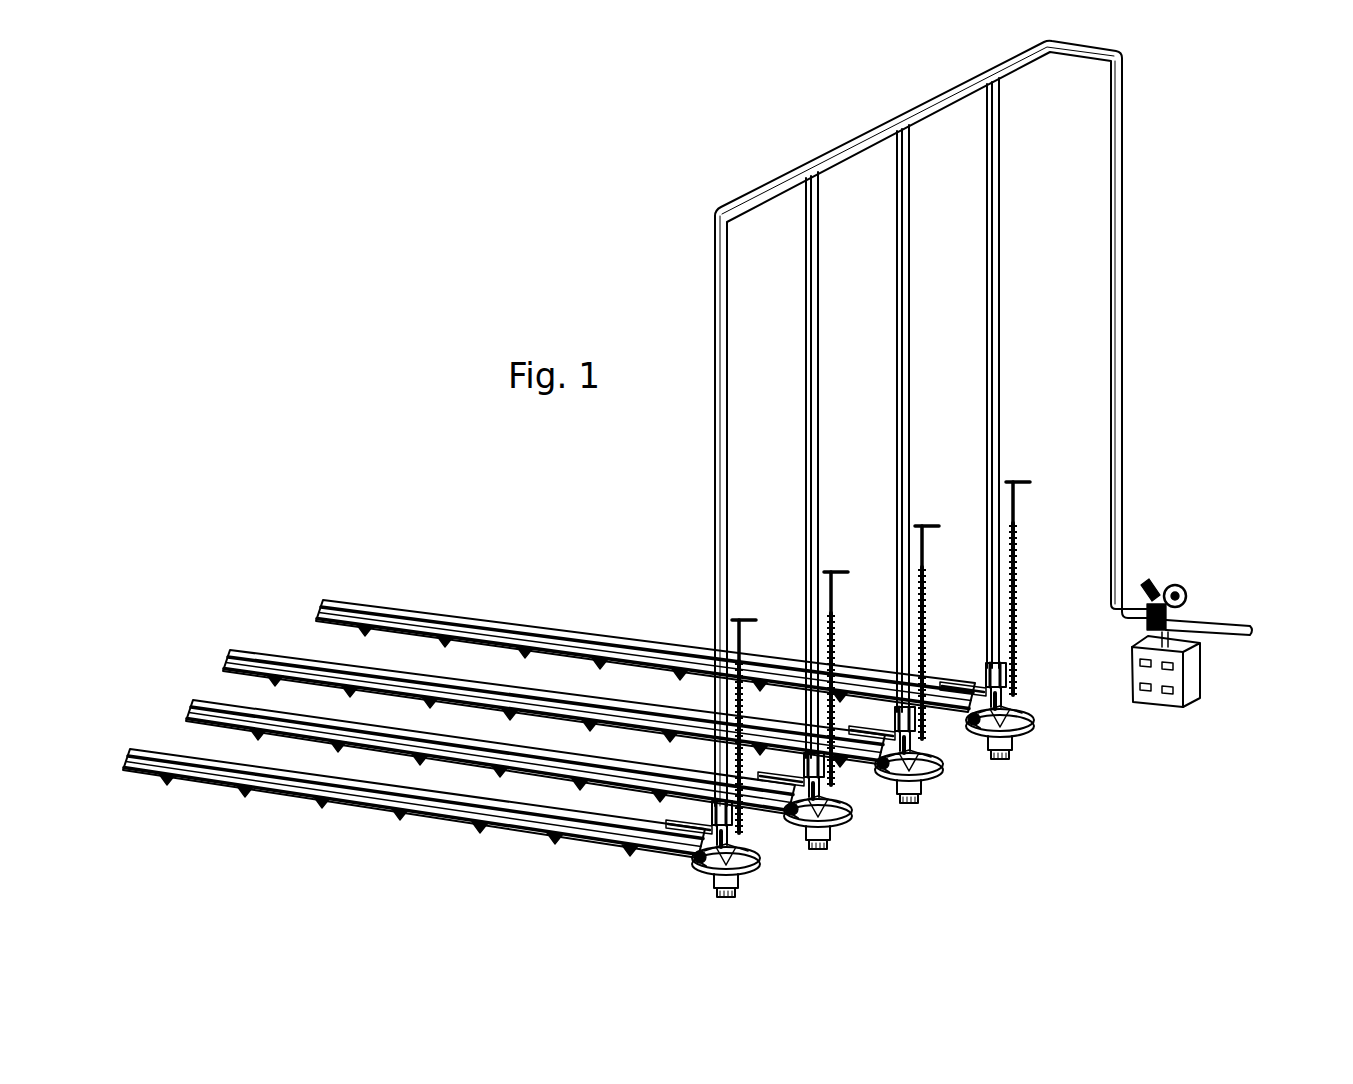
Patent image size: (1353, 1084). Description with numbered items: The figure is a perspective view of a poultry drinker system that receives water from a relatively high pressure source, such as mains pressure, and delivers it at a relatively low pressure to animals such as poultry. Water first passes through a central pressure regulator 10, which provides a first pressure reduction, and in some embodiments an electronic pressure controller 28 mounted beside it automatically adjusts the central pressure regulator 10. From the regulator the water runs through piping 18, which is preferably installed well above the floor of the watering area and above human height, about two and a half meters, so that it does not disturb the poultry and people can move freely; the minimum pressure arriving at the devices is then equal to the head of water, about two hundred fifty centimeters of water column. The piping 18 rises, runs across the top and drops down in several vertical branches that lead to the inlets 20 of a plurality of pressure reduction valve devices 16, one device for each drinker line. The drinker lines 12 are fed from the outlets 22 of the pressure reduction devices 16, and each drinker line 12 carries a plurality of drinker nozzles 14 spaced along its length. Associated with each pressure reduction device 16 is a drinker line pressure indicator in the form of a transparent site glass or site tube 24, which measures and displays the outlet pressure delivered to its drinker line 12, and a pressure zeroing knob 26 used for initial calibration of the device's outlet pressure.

The central pressure regulator 10 is at (1180, 597).
The drinker lines 12 is at (450, 680).
The drinker nozzles 14 is at (597, 667).
The pressure reduction valve devices 16 is at (837, 817).
The piping 18 is at (1122, 153).
The inlets 20 is at (923, 785).
The outlets 22 is at (783, 810).
The site tube 24 is at (930, 538).
The pressure zeroing knob 26 is at (1003, 757).
The electronic pressure controller 28 is at (1193, 673).